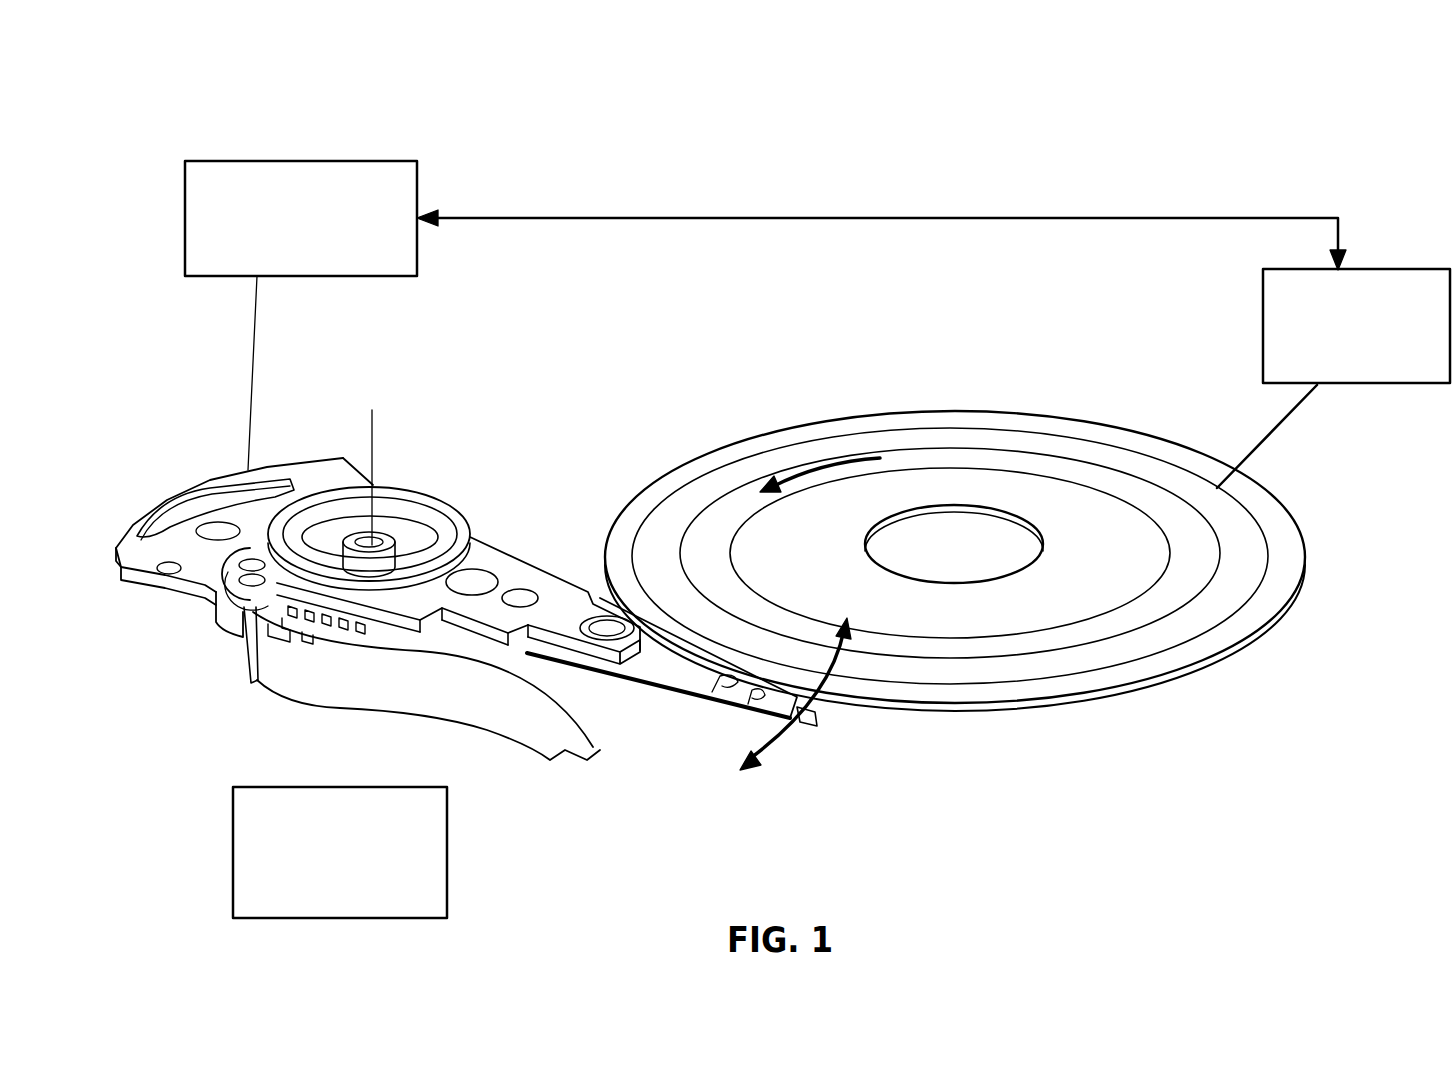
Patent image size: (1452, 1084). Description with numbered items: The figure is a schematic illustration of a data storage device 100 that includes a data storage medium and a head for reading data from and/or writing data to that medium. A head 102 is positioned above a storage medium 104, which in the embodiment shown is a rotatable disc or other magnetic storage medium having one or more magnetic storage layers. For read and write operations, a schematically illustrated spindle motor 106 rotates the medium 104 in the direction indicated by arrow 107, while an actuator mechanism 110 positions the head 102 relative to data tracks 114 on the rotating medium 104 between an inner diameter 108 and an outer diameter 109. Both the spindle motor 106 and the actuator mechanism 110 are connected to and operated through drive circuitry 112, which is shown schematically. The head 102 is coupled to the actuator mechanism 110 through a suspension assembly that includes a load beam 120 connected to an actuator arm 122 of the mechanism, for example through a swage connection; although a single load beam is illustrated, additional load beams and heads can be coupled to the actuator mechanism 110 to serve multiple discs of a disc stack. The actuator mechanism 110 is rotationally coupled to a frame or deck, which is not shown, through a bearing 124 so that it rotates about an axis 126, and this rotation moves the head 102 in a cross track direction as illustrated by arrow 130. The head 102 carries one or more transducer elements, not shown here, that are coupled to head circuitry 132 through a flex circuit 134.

The data storage device 100 is at (1192, 152).
The head 102 is at (815, 724).
The storage medium 104 is at (1128, 428).
The spindle motor 106 is at (1395, 270).
The arrow 107 is at (838, 458).
The inner diameter 108 is at (1000, 512).
The outer diameter 109 is at (962, 412).
The actuator mechanism 110 is at (560, 580).
The drive circuitry 112 is at (420, 172).
The data tracks 114 is at (1148, 590).
The load beam 120 is at (657, 657).
The actuator arm 122 is at (539, 566).
The bearing 124 is at (357, 537).
The axis 126 is at (367, 443).
The arrow 130 is at (837, 677).
The head circuitry 132 is at (448, 853).
The flex circuit 134 is at (343, 787).